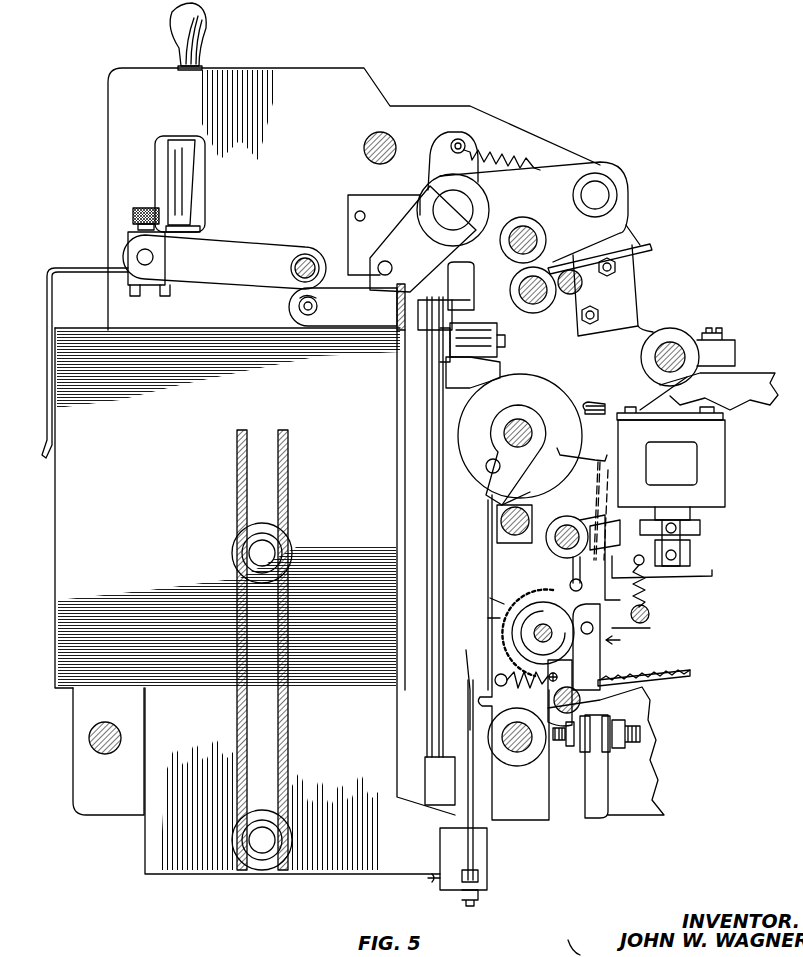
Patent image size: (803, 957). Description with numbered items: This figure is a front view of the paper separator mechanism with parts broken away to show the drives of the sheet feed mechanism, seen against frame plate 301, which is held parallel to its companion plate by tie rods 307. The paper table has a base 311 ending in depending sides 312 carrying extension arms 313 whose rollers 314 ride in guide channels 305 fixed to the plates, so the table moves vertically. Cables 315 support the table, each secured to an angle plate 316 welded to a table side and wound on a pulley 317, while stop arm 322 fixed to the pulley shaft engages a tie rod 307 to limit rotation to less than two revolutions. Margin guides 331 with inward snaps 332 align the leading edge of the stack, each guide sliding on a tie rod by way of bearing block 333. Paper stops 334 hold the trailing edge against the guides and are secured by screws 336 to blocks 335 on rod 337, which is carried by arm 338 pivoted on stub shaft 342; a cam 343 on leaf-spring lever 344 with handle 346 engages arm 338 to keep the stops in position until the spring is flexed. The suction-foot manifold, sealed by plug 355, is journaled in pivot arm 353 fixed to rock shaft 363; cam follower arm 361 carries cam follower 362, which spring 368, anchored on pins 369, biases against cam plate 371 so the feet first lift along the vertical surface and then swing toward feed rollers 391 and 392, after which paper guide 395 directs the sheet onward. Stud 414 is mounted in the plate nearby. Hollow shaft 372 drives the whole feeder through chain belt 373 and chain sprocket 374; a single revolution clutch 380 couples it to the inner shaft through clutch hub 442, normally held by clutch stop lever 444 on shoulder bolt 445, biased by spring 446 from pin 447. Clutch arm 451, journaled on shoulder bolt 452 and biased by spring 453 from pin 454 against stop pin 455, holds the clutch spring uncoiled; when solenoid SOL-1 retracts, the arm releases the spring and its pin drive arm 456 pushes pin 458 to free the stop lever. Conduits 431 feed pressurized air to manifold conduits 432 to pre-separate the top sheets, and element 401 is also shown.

The frame plate 301 is at (370, 70).
The guide channels 305 is at (288, 735).
The tie rods 307 is at (386, 135).
The base 311 is at (138, 696).
The depending sides 312 is at (305, 870).
The extension arms 313 is at (270, 700).
The rollers 314 is at (270, 516).
The cables 315 is at (473, 795).
The angle plate 316 is at (486, 843).
The pulley 317 is at (540, 380).
The stop arm 322 is at (534, 406).
The margin guides 331 is at (487, 576).
The snaps 332 is at (494, 318).
The bearing block 333 is at (546, 492).
The paper stops 334 is at (80, 266).
The blocks 335 is at (135, 296).
The screws 336 is at (142, 208).
The rod 337 is at (154, 257).
The arm 338 is at (232, 238).
The stub shaft 342 is at (291, 268).
The cam 343 is at (196, 182).
The lever 344 is at (190, 138).
The handle 346 is at (206, 20).
The pivot arm 353 is at (592, 160).
The plug 355 is at (473, 210).
The cam follower arm 361 is at (445, 140).
The cam follower 362 is at (376, 260).
The rock shaft 363 is at (580, 190).
The spring 368 is at (532, 156).
The pins 369 is at (466, 142).
The cam plate 371 is at (392, 190).
The hollow shaft 372 is at (583, 620).
The chain belt 373 is at (696, 656).
The chain sprocket 374 is at (475, 617).
The single revolution clutch 380 is at (668, 650).
The feed roller 391 is at (510, 270).
The feed roller 392 is at (546, 240).
The paper guide 395 is at (660, 228).
The pivot block 401 is at (395, 308).
The stud 414 is at (580, 290).
The conduits 431 is at (426, 878).
The manifold conduits 432 is at (410, 414).
The clutch hub 442 is at (515, 636).
The clutch stop lever 444 is at (582, 696).
The shoulder bolt 445 is at (605, 700).
The spring 446 is at (530, 690).
The pin 447 is at (495, 668).
The clutch arm 451 is at (692, 556).
The shoulder bolt 452 is at (590, 510).
The spring 453 is at (647, 592).
The pin 454 is at (650, 612).
The stop pin 455 is at (476, 597).
The pin drive arm 456 is at (604, 534).
The pin 458 is at (650, 628).
The solenoid SOL-1 is at (726, 462).